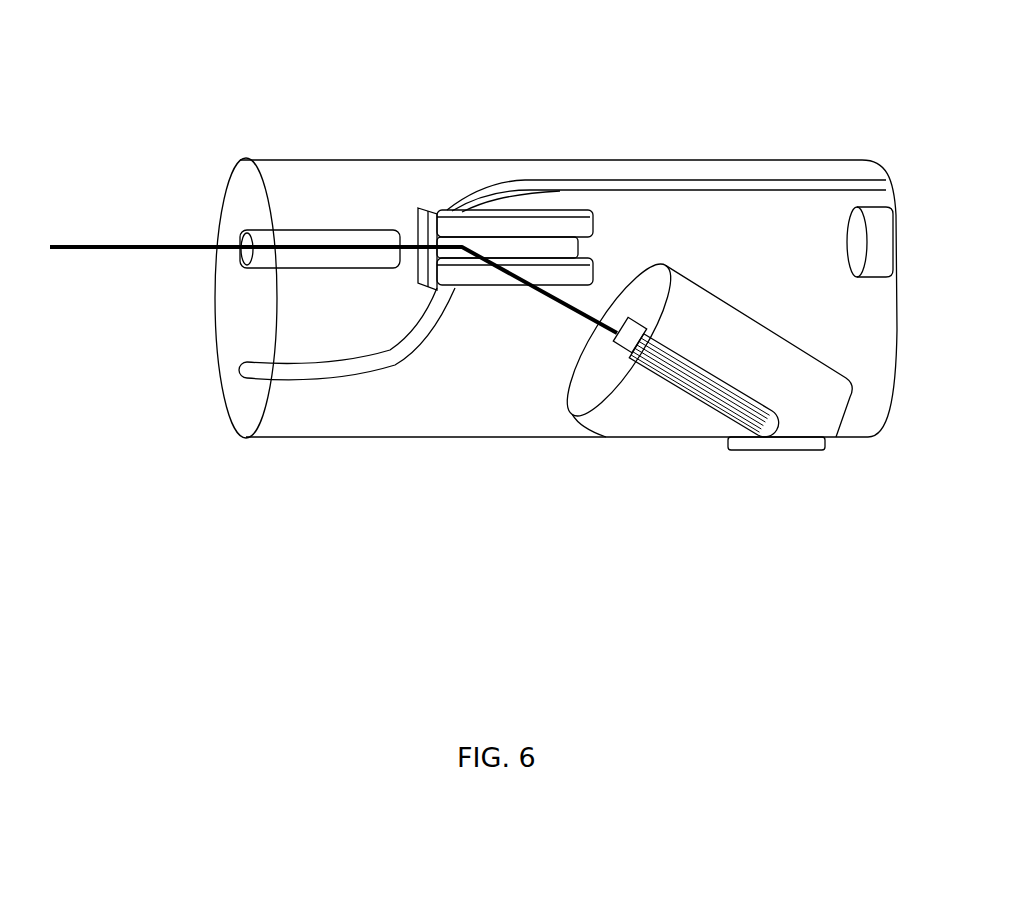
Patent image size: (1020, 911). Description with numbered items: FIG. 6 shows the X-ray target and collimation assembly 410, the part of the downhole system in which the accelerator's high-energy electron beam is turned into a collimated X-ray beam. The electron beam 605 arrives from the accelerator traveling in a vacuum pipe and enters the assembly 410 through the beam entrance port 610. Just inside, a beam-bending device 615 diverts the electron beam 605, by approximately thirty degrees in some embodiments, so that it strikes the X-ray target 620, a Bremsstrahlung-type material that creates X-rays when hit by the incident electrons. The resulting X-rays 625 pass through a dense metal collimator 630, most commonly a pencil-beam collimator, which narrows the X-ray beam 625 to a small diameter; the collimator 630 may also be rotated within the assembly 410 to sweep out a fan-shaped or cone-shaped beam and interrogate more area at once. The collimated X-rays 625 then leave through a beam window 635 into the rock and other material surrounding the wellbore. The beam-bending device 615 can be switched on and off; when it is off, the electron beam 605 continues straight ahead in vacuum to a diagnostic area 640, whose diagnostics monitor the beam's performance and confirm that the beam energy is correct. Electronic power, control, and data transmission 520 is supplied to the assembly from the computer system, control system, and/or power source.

The target and collimation assembly 410 is at (572, 90).
The electron beam 605 is at (157, 247).
The beam entrance port 610 is at (236, 249).
The beam-bending device 615 is at (433, 207).
The electronic power, control, and data transmission 520 is at (305, 392).
The X-ray target 620 is at (603, 350).
The X-rays 625 is at (670, 383).
The collimator 630 is at (690, 426).
The beam window 635 is at (808, 456).
The diagnostic area 640 is at (846, 213).